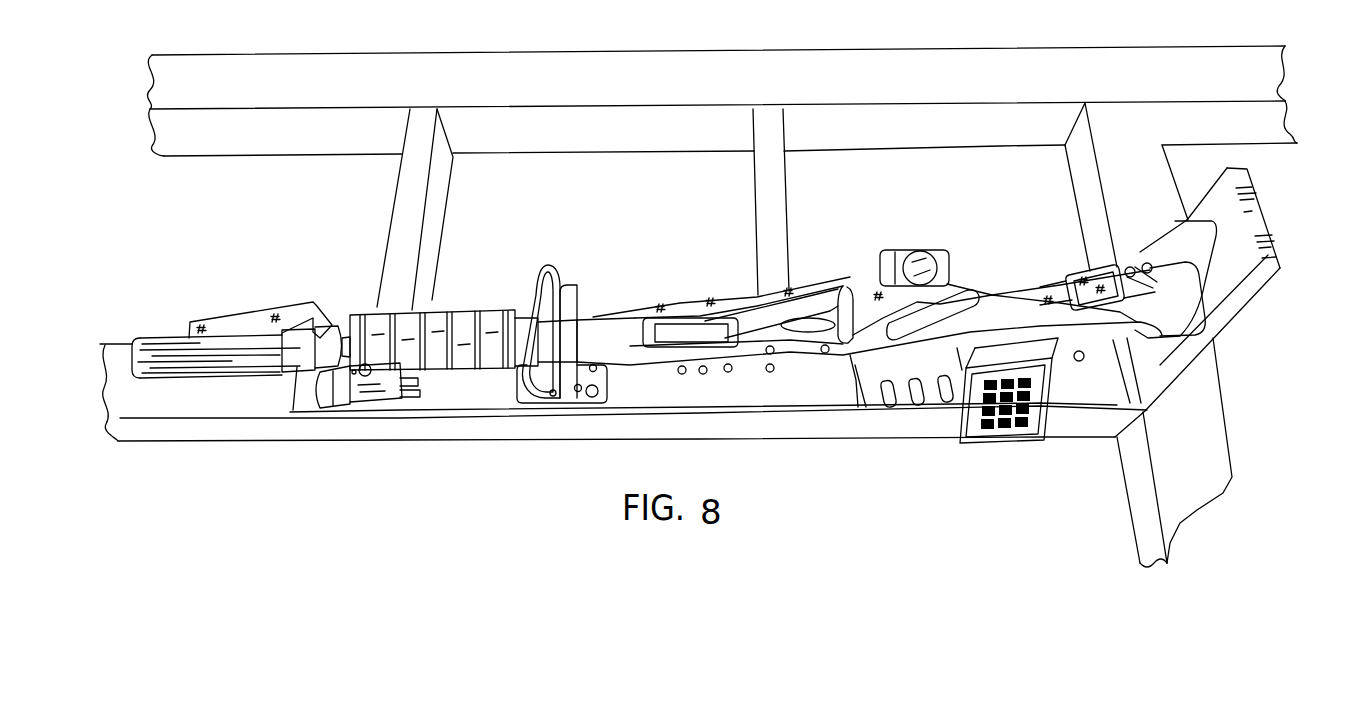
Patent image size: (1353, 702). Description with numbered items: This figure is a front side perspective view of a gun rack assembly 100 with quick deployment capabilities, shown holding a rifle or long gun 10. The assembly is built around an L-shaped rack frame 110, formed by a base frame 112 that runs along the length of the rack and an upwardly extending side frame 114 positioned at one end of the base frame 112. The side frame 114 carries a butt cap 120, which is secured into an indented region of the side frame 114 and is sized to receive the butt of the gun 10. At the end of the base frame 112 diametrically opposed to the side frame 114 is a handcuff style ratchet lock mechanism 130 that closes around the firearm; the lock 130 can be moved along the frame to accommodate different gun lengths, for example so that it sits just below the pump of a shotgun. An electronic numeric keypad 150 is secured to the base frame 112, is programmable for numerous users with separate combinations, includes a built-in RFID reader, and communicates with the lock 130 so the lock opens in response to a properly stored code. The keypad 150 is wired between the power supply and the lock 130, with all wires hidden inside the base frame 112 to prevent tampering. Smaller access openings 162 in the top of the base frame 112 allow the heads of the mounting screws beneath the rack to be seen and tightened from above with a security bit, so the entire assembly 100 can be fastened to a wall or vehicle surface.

The gun rack assembly 100 is at (433, 513).
The rifle or long gun 10 is at (432, 347).
The rack frame 110 is at (313, 392).
The base frame 112 is at (778, 438).
The side frame 114 is at (1213, 341).
The butt cap 120 is at (1213, 243).
The ratchet lock mechanism 130 is at (558, 265).
The electronic numeric keypad 150 is at (977, 443).
The access openings 162 is at (1083, 362).